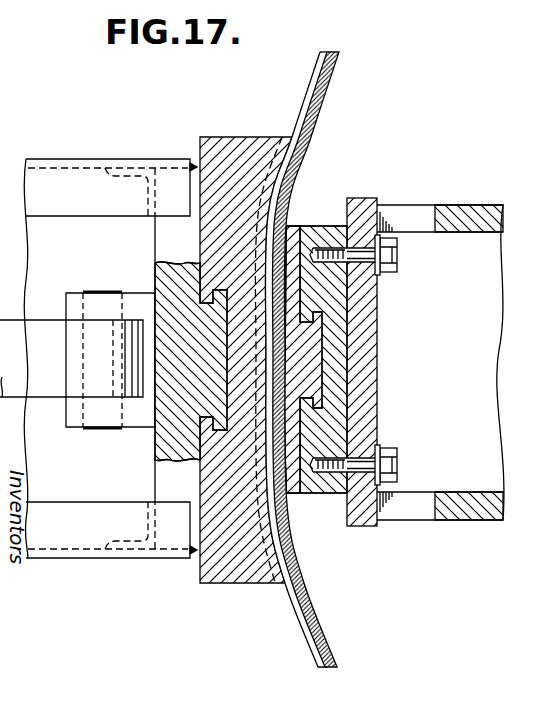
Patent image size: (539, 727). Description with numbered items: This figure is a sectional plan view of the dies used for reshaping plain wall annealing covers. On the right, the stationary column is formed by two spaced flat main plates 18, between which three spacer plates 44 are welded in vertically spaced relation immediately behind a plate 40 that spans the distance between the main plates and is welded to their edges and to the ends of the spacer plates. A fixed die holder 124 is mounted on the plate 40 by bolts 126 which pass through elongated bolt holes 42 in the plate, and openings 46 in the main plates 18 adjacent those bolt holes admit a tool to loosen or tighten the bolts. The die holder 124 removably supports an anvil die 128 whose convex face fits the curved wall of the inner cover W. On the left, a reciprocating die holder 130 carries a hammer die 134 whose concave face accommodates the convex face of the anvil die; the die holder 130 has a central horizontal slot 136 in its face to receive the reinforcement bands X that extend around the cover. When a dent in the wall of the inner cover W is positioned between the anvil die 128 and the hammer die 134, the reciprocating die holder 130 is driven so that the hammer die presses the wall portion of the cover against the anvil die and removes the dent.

The reciprocating die holder 130 is at (84, 155).
The hammer die 134 is at (246, 119).
The central horizontal slot 136 is at (268, 572).
The fixed die holder 124 is at (324, 225).
The anvil die 128 is at (287, 352).
The plate 40 is at (363, 198).
The spacer plates 44 is at (493, 274).
The flat main plates 18 is at (465, 210).
The openings 46 is at (430, 208).
The bolts 126 is at (393, 257).
The elongated bolt holes 42 is at (360, 270).
The inner cover W is at (331, 85).
The reinforcement bands X is at (308, 90).